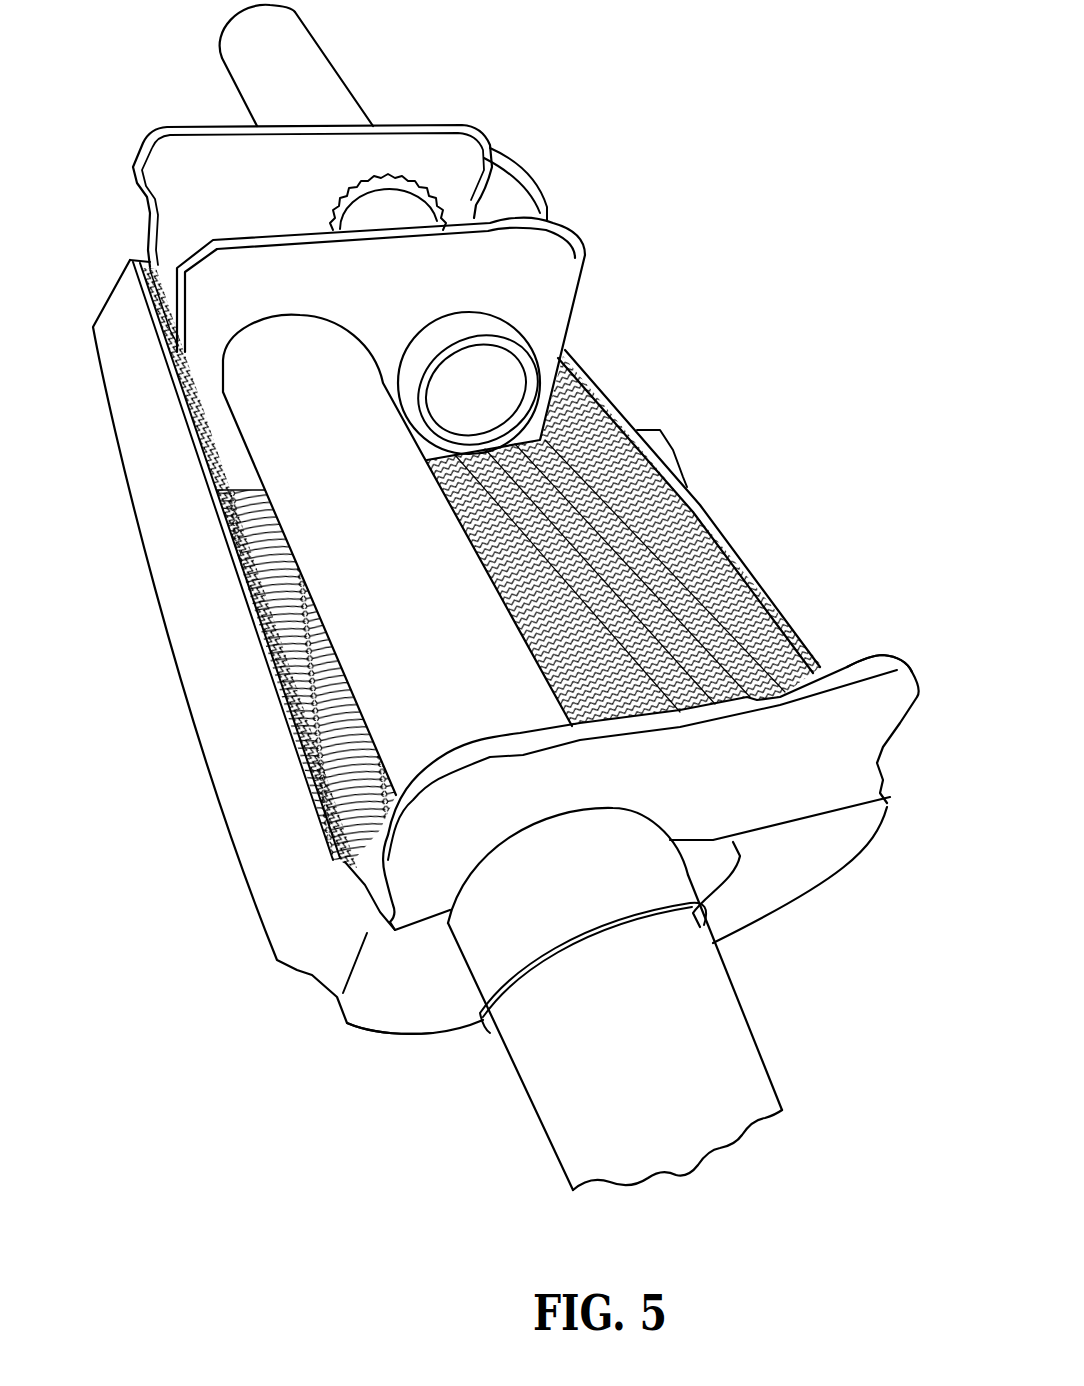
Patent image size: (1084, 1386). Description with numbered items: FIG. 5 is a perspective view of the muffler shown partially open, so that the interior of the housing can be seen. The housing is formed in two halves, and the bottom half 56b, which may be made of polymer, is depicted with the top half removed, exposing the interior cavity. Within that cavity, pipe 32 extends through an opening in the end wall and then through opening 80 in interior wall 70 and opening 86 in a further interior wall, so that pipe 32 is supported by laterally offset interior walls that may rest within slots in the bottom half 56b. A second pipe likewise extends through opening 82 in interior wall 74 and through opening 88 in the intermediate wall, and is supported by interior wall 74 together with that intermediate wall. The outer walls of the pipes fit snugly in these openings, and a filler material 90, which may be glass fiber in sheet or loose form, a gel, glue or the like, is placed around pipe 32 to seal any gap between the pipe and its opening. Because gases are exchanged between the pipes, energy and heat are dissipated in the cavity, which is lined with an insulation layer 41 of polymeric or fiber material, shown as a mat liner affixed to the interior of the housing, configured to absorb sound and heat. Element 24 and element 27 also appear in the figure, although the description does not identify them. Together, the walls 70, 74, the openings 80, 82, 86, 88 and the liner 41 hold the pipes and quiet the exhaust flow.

The shaft 24 is at (237, 50).
The opening 82 is at (395, 180).
The filler material 90 is at (430, 195).
The interior wall 74 is at (232, 193).
The opening 86 is at (262, 277).
The opening 88 is at (487, 330).
The insulation layer 41 is at (667, 557).
The interior wall 70 is at (860, 730).
The bottom half 56b is at (813, 870).
The pipe 32 is at (767, 1073).
The opening 80 is at (523, 843).
The end cap 27 is at (433, 1007).